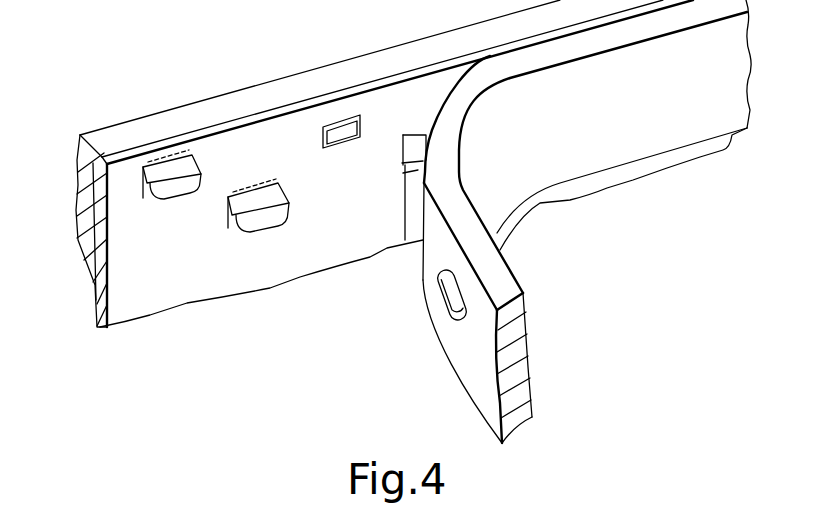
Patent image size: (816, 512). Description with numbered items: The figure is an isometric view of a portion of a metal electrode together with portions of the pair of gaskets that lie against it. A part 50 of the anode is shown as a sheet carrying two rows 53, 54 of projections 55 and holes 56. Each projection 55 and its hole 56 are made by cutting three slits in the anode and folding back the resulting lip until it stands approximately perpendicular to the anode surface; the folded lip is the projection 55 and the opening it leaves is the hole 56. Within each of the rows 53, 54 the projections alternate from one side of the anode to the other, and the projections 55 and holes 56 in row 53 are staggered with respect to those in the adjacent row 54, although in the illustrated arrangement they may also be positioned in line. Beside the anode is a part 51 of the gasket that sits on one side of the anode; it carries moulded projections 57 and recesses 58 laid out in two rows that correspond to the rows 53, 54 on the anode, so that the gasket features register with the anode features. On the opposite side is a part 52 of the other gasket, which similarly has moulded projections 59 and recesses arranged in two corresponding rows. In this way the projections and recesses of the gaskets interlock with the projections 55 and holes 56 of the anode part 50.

The part of the anode 50 is at (95, 306).
The part of gasket 51 is at (520, 308).
The part of gasket 52 is at (115, 131).
The row 53 is at (108, 177).
The row 54 is at (221, 231).
The projection 55 is at (176, 166).
The hole 56 is at (347, 130).
The moulded projection 57 is at (415, 242).
The recess 58 is at (440, 290).
The moulded projection 59 is at (200, 191).